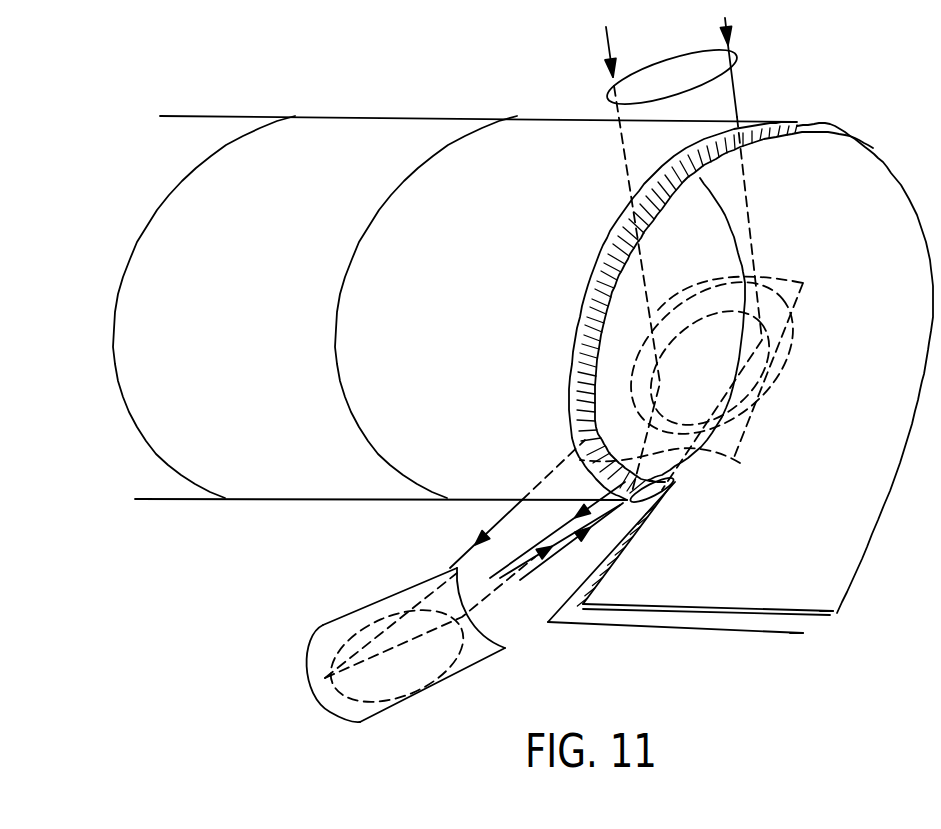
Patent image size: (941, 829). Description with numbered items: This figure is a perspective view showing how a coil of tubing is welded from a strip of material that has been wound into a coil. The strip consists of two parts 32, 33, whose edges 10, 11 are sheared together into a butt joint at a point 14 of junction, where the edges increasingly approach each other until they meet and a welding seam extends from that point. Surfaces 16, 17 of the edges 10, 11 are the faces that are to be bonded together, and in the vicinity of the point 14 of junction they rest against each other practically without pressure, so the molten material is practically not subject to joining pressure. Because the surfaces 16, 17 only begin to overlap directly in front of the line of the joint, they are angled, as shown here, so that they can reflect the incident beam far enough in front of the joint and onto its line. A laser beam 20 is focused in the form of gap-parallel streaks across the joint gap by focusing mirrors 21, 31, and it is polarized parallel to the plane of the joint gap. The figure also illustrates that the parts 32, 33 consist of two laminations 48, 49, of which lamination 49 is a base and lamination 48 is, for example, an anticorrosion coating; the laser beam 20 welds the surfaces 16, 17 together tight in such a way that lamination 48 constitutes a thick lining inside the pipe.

The edge 10 is at (568, 371).
The edge 11 is at (665, 582).
The point of junction 14 is at (667, 484).
The surface 16 is at (653, 193).
The surface 17 is at (562, 596).
The laser beam 20 is at (738, 58).
The focusing mirror 21 is at (733, 438).
The focusing mirror 31 is at (473, 658).
The part 32 is at (545, 176).
The part 33 is at (870, 448).
The lamination 48 is at (832, 616).
The lamination 49 is at (805, 626).